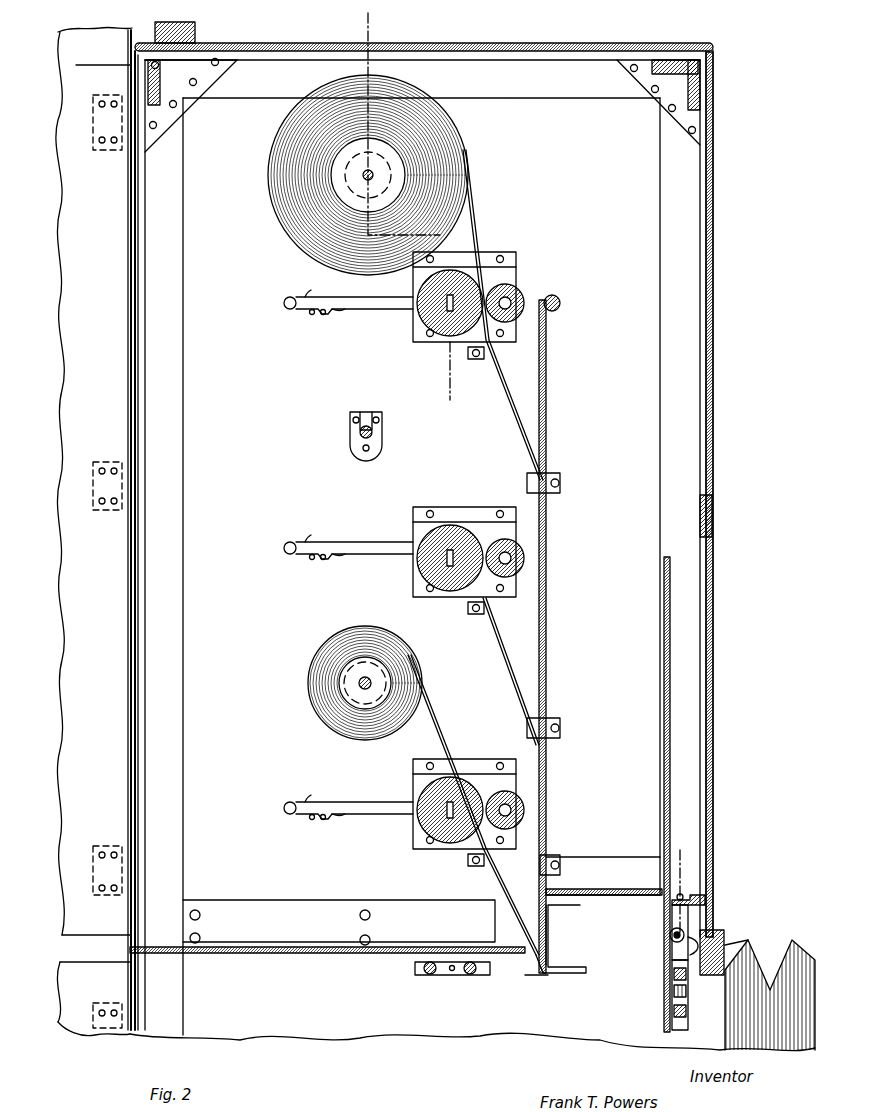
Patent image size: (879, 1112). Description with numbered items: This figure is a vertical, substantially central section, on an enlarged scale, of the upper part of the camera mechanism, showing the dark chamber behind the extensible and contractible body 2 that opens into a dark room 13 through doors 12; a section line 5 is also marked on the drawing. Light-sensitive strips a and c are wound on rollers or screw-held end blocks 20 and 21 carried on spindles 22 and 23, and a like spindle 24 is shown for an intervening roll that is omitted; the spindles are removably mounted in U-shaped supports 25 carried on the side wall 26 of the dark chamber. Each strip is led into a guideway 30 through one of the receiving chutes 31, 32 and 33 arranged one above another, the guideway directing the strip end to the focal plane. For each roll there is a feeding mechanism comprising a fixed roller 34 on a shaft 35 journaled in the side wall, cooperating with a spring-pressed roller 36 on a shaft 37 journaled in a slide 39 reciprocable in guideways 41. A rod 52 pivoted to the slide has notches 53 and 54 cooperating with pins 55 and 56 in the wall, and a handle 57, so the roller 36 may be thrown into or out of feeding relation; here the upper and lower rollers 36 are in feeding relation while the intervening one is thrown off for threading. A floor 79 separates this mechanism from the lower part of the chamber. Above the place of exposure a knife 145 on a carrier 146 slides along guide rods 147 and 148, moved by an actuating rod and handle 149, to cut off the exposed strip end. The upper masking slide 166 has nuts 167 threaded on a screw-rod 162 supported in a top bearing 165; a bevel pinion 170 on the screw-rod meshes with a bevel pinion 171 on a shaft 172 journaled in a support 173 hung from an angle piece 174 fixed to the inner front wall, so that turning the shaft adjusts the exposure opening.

The extensible and contractible body 2 is at (775, 950).
The section line 5- 5 is at (362, 31).
The doors 12 is at (95, 370).
The dark room 13 is at (85, 524).
The end blocks 20 is at (335, 176).
The end blocks 21 is at (340, 690).
The spindle 22 is at (372, 173).
The spindle 23 is at (362, 681).
The spindle 24 is at (383, 440).
The U-shaped supports 25 is at (349, 440).
The side wall 26 is at (630, 395).
The guideway 30 is at (560, 945).
The receiving chute 31 is at (530, 387).
The receiving chute 32 is at (525, 640).
The receiving chute 33 is at (548, 872).
The roller 34 is at (432, 313).
The shaft 35 is at (440, 297).
The spring-pressed roller 36 is at (510, 295).
The shaft 37 is at (505, 303).
The slide 39 is at (496, 278).
The guideways 41 is at (490, 256).
The rod 52 is at (388, 318).
The notch 53 is at (308, 538).
The notch 54 is at (340, 292).
The pin 55 is at (310, 315).
The pin 56 is at (324, 315).
The handle 57 is at (284, 298).
The floor 79 is at (330, 954).
The knife 145 is at (540, 978).
The carrier 146 is at (413, 975).
The guide rod 147 is at (424, 976).
The guide rod 148 is at (470, 978).
The actuating rod and handle 149 is at (450, 975).
The screw-rod 162 is at (676, 996).
The top bearing 165 is at (674, 975).
The upper masking slide 166 is at (670, 793).
The nuts 167 is at (674, 1012).
The bevel pinion 170 is at (674, 960).
The bevel pinion 171 is at (690, 932).
The shaft 172 is at (668, 935).
The support 173 is at (686, 918).
The angle piece 174 is at (690, 893).
The light sensitive strip a is at (470, 206).
The light sensitive strip c is at (460, 700).